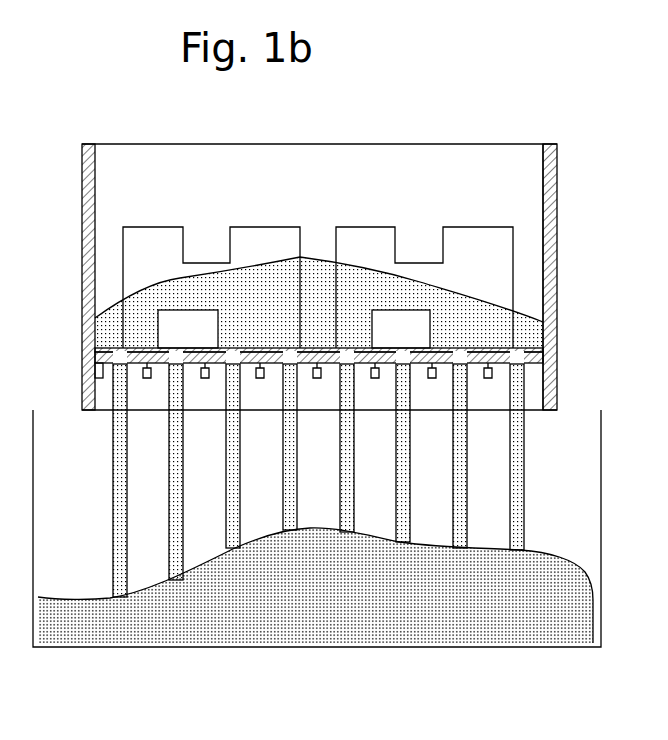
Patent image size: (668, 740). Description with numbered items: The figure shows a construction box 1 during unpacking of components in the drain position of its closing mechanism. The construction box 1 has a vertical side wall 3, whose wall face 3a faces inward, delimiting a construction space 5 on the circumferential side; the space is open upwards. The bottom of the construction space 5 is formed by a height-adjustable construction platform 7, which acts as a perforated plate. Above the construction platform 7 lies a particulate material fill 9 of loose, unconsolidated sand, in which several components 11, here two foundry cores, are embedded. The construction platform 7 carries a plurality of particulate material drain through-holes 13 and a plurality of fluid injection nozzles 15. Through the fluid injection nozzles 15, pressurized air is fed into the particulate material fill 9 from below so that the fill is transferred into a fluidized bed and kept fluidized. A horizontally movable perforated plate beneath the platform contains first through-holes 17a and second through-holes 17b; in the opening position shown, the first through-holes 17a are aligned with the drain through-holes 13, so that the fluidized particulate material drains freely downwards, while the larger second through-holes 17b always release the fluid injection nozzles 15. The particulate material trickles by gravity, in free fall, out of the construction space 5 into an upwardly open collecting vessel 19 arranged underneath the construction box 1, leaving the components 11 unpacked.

The construction box 1 is at (472, 108).
The side wall 3 is at (557, 170).
The housing wall 3a is at (534, 208).
The construction space 5 is at (123, 161).
The construction platform 7 is at (95, 380).
The particulate material fill 9 is at (322, 265).
The components 11 is at (250, 240).
The particulate material drain through-holes 13 is at (517, 368).
The fluid injection nozzles 15 is at (150, 382).
The first through-holes 17a is at (520, 346).
The second through-holes 17b is at (380, 352).
The collecting vessel 19 is at (603, 535).